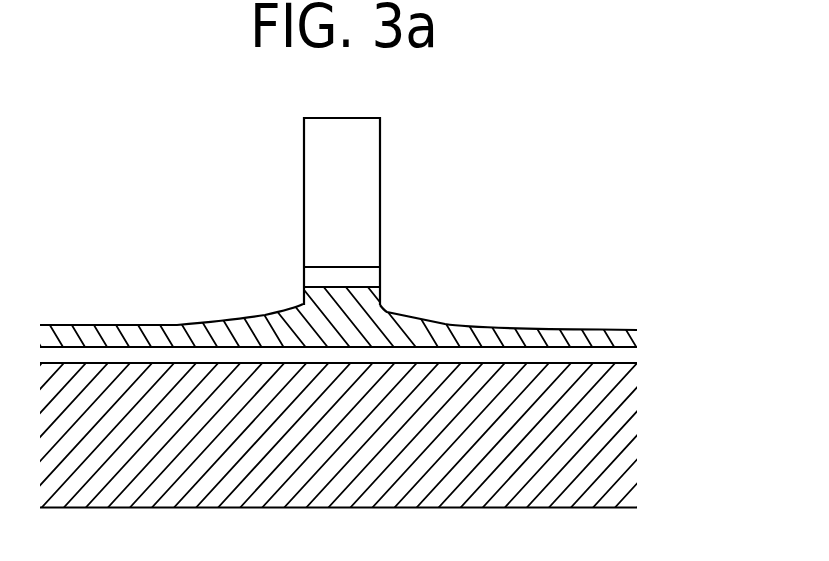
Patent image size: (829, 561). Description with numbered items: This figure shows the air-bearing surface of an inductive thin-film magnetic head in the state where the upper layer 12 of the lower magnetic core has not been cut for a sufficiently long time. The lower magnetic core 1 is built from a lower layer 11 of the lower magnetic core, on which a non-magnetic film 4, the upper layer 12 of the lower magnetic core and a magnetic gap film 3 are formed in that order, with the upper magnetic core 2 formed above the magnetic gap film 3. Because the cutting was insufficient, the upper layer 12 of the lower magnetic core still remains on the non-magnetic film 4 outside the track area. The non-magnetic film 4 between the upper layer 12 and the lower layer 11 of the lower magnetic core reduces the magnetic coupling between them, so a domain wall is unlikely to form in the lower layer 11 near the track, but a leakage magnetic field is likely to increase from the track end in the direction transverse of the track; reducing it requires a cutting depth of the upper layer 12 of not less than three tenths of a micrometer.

The lower magnetic core 1 is at (392, 372).
The upper magnetic core 2 is at (364, 167).
The magnetic gap film 3 is at (364, 279).
The non-magnetic film 4 is at (472, 357).
The lower layer of the lower magnetic core 11 is at (385, 432).
The upper layer of the lower magnetic core 12 is at (613, 324).